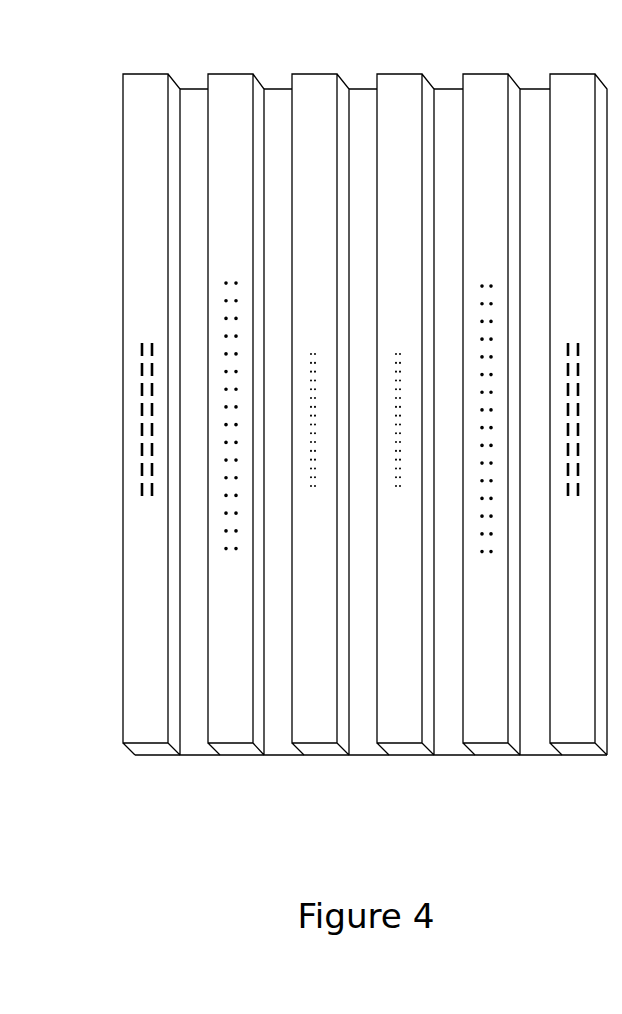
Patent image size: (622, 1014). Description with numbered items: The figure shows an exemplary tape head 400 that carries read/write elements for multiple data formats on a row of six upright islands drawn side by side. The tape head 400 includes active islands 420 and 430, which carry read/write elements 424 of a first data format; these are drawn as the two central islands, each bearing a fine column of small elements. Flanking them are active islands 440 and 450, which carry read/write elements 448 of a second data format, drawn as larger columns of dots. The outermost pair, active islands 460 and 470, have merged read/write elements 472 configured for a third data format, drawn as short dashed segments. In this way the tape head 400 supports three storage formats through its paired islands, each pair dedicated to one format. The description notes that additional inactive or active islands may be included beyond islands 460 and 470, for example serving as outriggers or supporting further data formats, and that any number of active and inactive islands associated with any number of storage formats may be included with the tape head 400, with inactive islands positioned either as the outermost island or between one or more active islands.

The tape head 400 is at (290, 60).
The active island 470 is at (116, 453).
The active island 450 is at (155, 453).
The active island 430 is at (198, 453).
The active island 420 is at (402, 731).
The active island 440 is at (490, 731).
The active island 460 is at (572, 731).
The merged read/write elements 472 is at (137, 401).
The read/write elements 424 is at (303, 433).
The read/write elements 448 is at (226, 533).